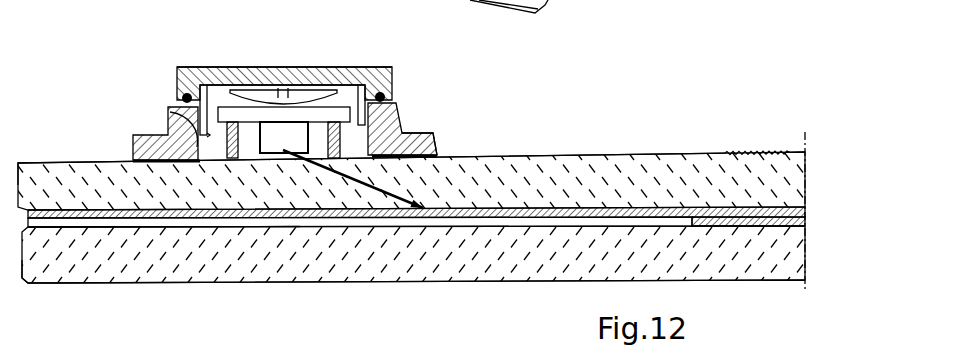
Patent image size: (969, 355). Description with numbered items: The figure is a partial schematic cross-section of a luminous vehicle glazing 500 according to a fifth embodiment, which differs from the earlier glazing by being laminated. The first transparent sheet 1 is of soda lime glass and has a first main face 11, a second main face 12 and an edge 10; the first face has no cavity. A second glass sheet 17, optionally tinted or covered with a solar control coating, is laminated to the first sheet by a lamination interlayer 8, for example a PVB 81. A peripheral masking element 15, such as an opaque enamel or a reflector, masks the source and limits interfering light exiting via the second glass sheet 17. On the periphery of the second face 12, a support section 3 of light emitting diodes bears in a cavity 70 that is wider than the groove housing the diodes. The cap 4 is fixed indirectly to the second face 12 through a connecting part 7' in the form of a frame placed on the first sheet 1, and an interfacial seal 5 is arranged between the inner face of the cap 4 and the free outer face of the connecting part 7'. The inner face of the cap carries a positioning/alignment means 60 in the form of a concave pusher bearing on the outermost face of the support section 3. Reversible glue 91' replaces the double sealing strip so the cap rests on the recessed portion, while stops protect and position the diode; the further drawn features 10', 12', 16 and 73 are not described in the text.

The first transparent sheet 1 is at (521, 163).
The support section 3 is at (346, 107).
The cap 4 is at (238, 67).
The interfacial seal 5 is at (188, 66).
The connecting part 7' is at (146, 110).
The lamination interlayer 8 is at (355, 138).
The edge 10 is at (40, 141).
The lower side edge 10' is at (45, 305).
The first main face 11 is at (475, 212).
The second main face 12 is at (392, 127).
The roughened surface 12' is at (765, 124).
The peripheral masking element 15 is at (87, 223).
The conductive layer 16 is at (704, 227).
The second glass sheet 17 is at (265, 283).
The positioning/alignment means 60 is at (307, 100).
The cavity 70 is at (263, 90).
The spacer block 73 is at (406, 130).
The PVB 81 is at (755, 220).
The reversible glue 91' is at (439, 117).
The luminous vehicle glazing 500 is at (607, 77).